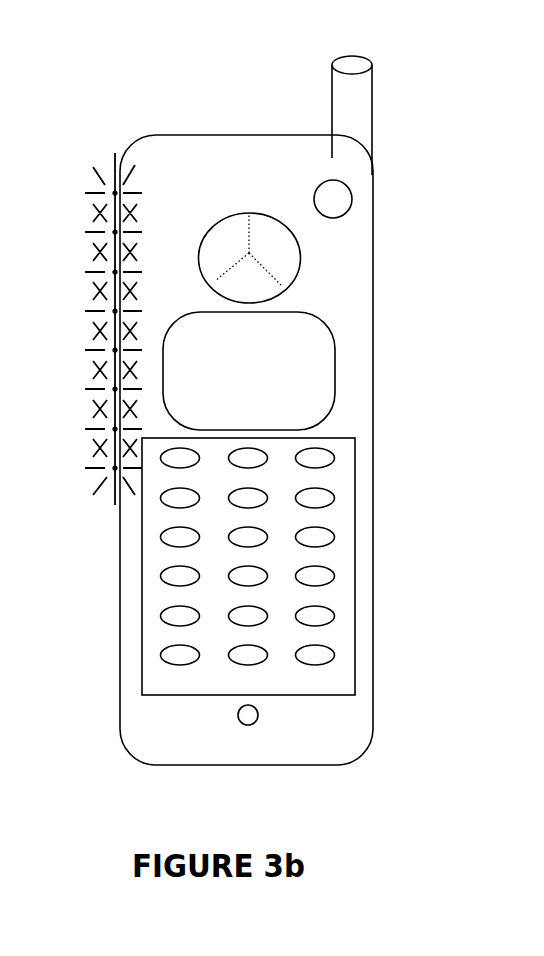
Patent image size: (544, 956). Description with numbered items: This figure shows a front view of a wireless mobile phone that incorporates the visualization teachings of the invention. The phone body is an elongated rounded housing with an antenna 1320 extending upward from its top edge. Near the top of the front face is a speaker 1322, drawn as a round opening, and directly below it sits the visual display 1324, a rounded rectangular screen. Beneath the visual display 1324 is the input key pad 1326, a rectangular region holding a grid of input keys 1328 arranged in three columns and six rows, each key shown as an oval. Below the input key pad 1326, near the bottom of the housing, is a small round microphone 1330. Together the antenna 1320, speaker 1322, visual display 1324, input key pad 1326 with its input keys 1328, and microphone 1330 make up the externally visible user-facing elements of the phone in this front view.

The antenna 1320 is at (374, 137).
The speaker 1322 is at (300, 272).
The visual display 1324 is at (317, 373).
The input key pad 1326 is at (337, 475).
The input keys 1328 is at (162, 645).
The microphone 1330 is at (258, 707).